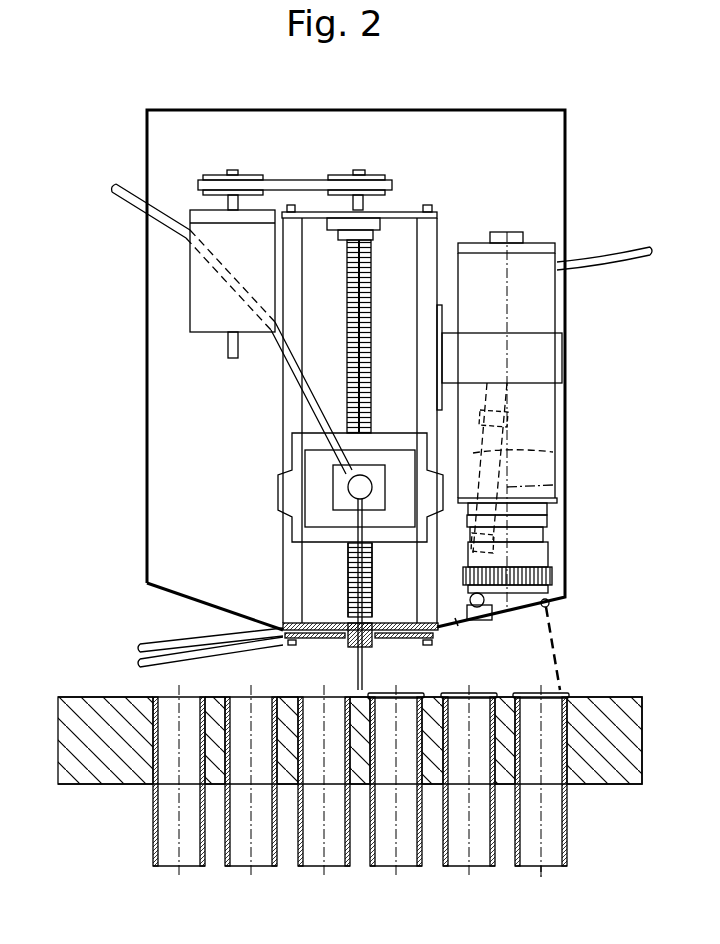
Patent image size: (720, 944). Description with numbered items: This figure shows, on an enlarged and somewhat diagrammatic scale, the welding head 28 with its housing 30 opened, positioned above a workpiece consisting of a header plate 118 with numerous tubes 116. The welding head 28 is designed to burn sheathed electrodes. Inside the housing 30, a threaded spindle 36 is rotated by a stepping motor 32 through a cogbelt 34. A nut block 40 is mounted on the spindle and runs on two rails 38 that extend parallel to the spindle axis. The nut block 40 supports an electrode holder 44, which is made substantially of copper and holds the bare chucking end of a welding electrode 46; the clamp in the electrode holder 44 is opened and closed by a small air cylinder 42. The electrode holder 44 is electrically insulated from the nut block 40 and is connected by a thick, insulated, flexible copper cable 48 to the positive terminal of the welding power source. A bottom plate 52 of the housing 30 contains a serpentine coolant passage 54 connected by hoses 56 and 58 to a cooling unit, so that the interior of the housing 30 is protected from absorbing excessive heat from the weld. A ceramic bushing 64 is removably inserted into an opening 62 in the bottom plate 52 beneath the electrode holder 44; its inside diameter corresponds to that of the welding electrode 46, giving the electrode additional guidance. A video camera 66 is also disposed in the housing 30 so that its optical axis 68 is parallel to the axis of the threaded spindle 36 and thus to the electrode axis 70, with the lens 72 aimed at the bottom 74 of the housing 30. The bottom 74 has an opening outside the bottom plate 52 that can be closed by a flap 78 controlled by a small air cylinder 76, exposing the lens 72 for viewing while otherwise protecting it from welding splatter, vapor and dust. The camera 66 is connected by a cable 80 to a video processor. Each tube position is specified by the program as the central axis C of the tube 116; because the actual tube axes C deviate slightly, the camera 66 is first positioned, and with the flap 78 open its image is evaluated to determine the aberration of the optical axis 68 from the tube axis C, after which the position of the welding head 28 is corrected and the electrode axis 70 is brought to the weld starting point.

The welding head 28 is at (583, 147).
The housing 30 is at (512, 110).
The stepping motor 32 is at (190, 318).
The cogbelt 34 is at (306, 183).
The threaded spindle 36 is at (372, 340).
The rails 38 is at (300, 272).
The nut block 40 is at (380, 436).
The small air cylinder 42 is at (349, 484).
The electrode holder 44 is at (340, 503).
The welding electrode 46 is at (352, 603).
The flexible copper cable 48 is at (128, 200).
The bottom plate 52 is at (390, 623).
The serpentine coolant passage 54 is at (332, 637).
The hose 56 is at (148, 643).
The hose 58 is at (148, 664).
The opening 62 is at (372, 641).
The ceramic bushing 64 is at (357, 650).
The video camera 66 is at (548, 430).
The optical axis 68 is at (553, 485).
The electrode axis 70 is at (373, 573).
The lens 72 is at (540, 562).
The bottom 74 is at (181, 597).
The small air cylinder 76 is at (553, 452).
The flap 78 is at (500, 623).
The cable 80 is at (618, 250).
The tubes 116 is at (240, 860).
The header plate 118 is at (612, 705).
The central axis of the tube C is at (546, 884).